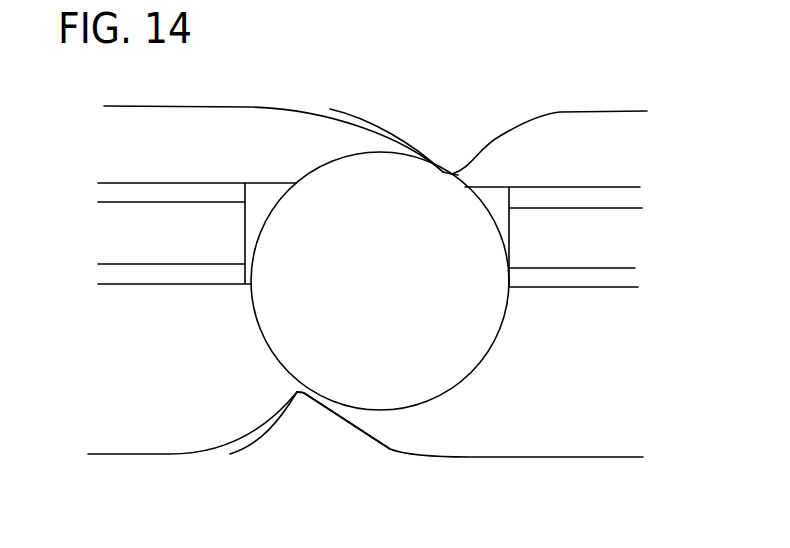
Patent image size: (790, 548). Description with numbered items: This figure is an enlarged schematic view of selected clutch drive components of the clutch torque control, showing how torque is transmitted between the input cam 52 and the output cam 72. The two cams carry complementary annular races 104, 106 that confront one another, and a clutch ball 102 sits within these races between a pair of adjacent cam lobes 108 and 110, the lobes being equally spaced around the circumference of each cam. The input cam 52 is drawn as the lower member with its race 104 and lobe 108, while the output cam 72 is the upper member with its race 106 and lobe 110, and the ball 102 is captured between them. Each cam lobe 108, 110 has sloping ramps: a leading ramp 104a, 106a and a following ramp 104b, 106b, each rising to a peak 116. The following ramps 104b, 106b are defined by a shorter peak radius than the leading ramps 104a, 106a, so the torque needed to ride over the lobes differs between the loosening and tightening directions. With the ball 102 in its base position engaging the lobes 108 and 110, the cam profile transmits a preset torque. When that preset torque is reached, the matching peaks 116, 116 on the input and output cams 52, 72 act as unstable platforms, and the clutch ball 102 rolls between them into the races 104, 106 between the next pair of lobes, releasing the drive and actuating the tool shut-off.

The input cam 52 is at (534, 474).
The output cam 72 is at (282, 86).
The clutch ball 102 is at (393, 328).
The annular race 104 is at (117, 451).
The leading ramp 104a is at (358, 428).
The following ramp 104b is at (287, 402).
The annular race 106 is at (202, 109).
The leading ramp 106a is at (398, 136).
The following ramp 106b is at (490, 143).
The cam lobe 108 is at (328, 436).
The cam lobe 110 is at (462, 150).
The cam peak 116 is at (466, 175).